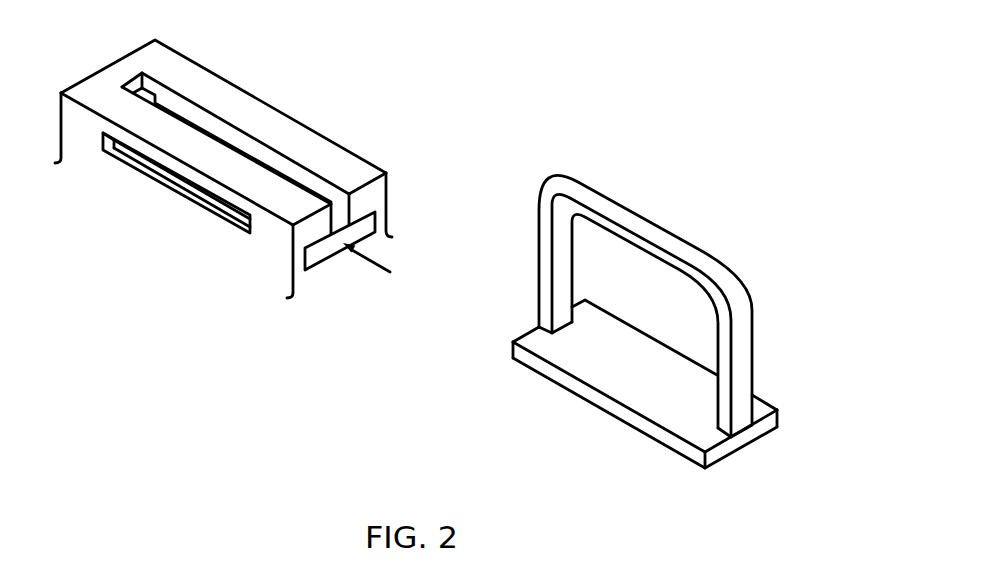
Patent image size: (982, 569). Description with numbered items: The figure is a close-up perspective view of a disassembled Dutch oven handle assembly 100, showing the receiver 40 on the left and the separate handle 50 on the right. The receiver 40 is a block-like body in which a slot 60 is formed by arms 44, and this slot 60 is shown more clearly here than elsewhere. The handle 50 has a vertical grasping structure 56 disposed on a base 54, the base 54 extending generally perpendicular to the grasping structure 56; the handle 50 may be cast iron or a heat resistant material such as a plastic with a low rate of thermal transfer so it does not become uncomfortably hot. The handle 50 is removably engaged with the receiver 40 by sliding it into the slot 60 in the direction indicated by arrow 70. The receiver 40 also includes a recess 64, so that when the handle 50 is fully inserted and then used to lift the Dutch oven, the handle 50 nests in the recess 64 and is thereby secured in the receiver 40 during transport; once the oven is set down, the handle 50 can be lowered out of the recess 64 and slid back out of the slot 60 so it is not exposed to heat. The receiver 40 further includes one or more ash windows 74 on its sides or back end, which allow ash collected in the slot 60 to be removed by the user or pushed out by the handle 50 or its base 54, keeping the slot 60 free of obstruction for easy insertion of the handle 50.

The Dutch oven handle assembly 100 is at (739, 119).
The receiver 40 is at (244, 255).
The arms 44 is at (333, 225).
The slot 60 is at (361, 196).
The recess 64 is at (329, 208).
The arrow 70 is at (380, 268).
The ash windows 74 is at (136, 182).
The handle 50 is at (773, 270).
The base 54 is at (620, 373).
The grasping structure 56 is at (607, 203).